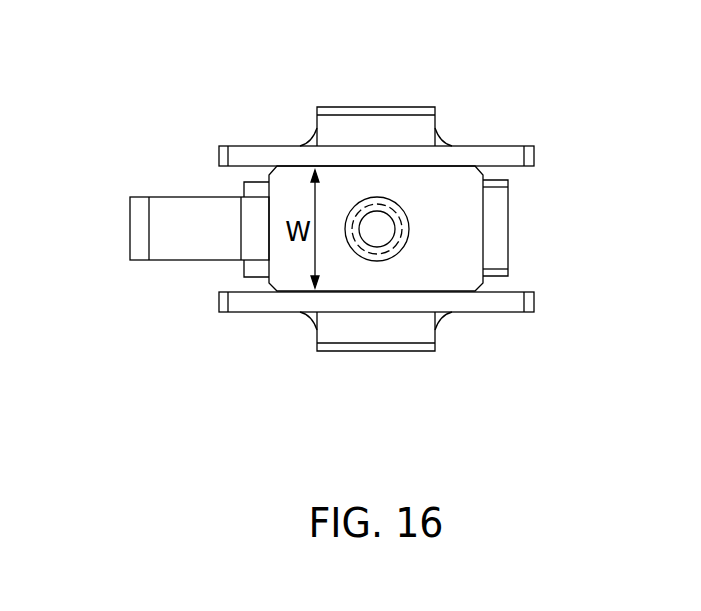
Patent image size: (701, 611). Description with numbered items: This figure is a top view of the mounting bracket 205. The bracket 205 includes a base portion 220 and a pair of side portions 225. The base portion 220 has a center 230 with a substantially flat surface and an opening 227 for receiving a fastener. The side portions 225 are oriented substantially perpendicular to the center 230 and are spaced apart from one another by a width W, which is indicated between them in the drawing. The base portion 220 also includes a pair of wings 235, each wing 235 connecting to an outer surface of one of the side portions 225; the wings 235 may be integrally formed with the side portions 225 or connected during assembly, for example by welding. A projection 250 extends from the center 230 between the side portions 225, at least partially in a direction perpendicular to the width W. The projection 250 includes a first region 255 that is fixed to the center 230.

The bracket 205 is at (157, 64).
The base portion 220 is at (467, 257).
The side portions 225 is at (268, 160).
The opening 227 is at (407, 219).
The center 230 is at (283, 283).
The wings 235 is at (380, 120).
The projection 250 is at (130, 229).
The first region 255 is at (169, 250).